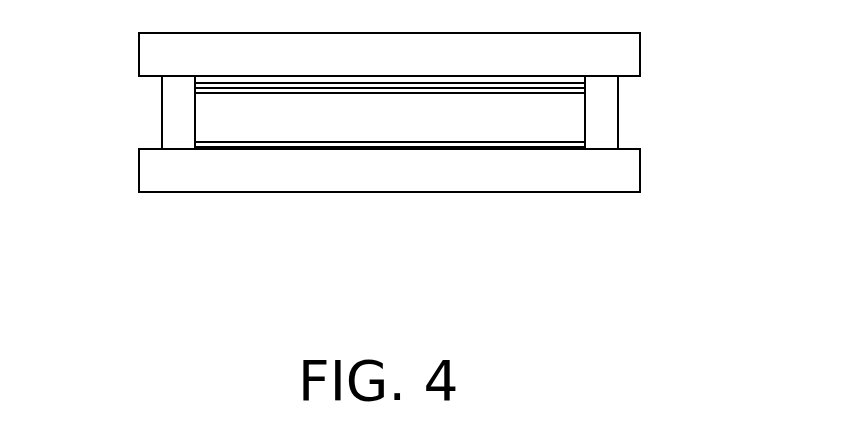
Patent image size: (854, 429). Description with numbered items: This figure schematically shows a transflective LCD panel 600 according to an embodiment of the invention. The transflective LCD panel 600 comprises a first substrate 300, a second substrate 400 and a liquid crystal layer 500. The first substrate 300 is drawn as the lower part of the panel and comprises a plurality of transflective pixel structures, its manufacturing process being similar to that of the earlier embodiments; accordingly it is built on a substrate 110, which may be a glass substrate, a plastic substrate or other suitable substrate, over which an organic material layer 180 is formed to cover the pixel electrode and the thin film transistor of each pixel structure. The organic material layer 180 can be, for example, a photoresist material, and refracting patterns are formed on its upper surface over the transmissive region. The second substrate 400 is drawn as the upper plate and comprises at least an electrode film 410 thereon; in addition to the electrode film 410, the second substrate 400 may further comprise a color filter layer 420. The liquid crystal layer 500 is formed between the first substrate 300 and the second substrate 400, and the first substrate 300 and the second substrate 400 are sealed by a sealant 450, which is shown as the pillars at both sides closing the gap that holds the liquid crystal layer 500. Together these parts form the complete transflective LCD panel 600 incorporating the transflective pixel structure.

The transflective LCD panel 600 is at (644, 298).
The second substrate 400 is at (650, 33).
The color filter layer 420 is at (195, 80).
The electrode film 410 is at (195, 88).
The sealant 450 is at (612, 104).
The liquid crystal layer 500 is at (570, 120).
The organic material layer 180 is at (583, 143).
The substrate 110 is at (617, 183).
The first substrate 300 is at (730, 162).